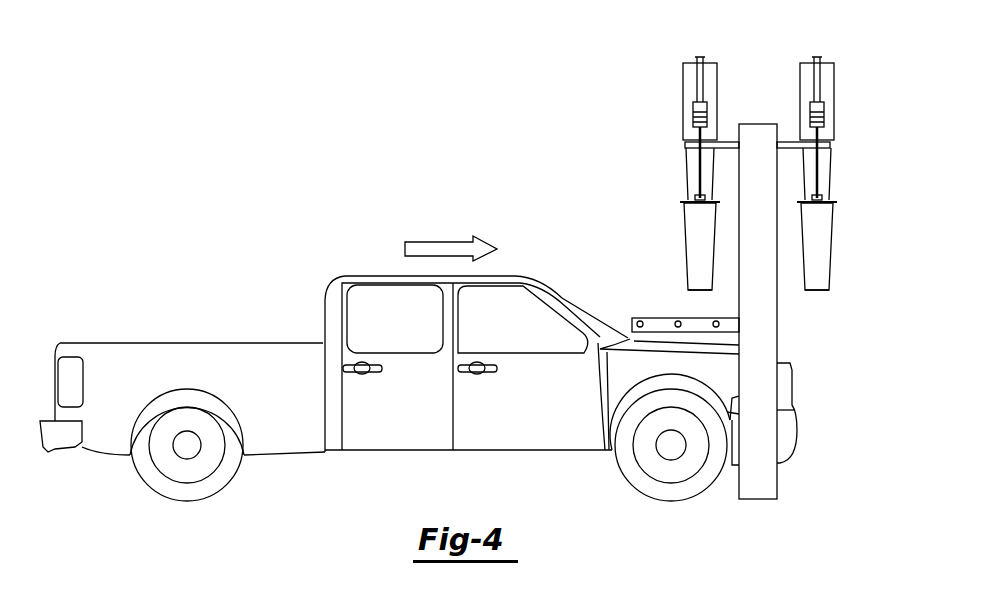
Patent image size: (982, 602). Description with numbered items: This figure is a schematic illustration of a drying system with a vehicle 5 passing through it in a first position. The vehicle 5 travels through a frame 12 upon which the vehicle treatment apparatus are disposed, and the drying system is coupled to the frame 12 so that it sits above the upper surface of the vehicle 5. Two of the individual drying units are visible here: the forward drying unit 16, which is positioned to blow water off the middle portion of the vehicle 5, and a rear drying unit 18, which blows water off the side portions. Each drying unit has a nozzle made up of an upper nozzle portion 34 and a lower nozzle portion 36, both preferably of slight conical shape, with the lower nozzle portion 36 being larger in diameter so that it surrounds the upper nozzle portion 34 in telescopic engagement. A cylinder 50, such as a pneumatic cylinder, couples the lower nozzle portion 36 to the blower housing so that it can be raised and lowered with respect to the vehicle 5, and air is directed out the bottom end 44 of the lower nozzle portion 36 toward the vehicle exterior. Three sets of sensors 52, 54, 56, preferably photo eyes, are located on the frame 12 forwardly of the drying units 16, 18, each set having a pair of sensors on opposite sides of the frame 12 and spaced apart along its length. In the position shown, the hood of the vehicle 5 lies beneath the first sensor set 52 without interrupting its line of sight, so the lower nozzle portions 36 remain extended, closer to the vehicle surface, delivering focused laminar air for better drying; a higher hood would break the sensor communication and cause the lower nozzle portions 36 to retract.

The vehicle 5 is at (343, 245).
The frame 12 is at (765, 482).
The forward drying unit 16 is at (835, 89).
The rear drying unit 18 is at (718, 89).
The upper nozzle portion 34 is at (684, 165).
The lower nozzle portion 36 is at (686, 247).
The bottom end of lower nozzle portion 44 is at (700, 290).
The cylinder 50 is at (700, 57).
The first sensor set 52 is at (636, 322).
The second sensor set 54 is at (678, 328).
The third sensor set 56 is at (719, 324).